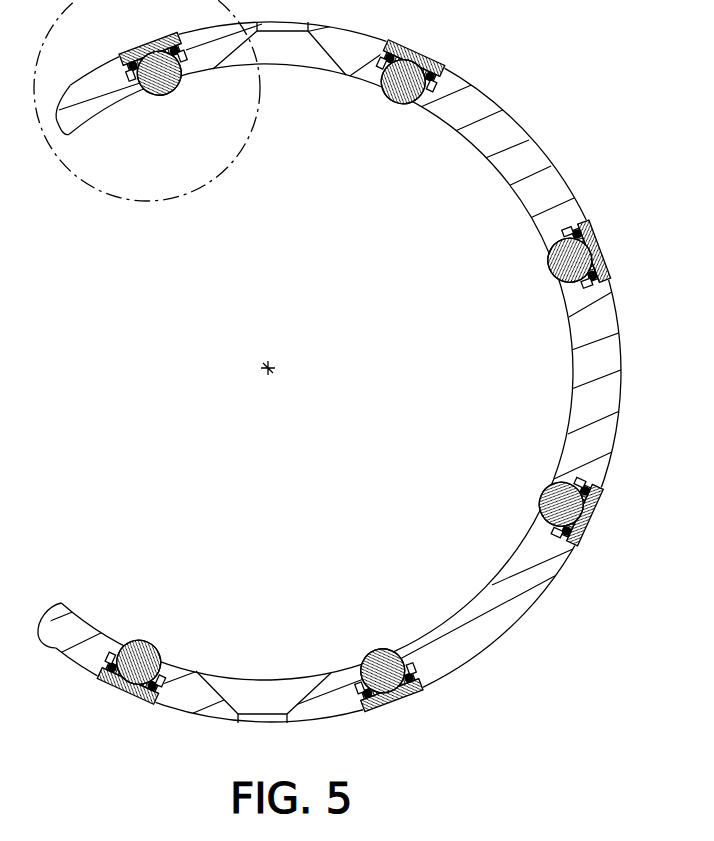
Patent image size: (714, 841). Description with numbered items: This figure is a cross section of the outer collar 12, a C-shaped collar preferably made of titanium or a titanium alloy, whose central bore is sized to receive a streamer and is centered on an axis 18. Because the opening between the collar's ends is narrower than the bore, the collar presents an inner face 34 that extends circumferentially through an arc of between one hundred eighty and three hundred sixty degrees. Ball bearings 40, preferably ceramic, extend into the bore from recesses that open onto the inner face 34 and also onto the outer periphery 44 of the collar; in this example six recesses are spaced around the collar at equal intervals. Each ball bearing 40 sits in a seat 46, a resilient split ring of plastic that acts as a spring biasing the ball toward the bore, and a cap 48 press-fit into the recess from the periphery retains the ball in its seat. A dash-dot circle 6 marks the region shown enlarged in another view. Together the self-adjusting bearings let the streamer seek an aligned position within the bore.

The detail circle for FIG. 6 is at (161, 202).
The outer collar 12 is at (351, 372).
The axis 18 is at (279, 366).
The inner face 34 is at (505, 178).
The ball bearing 40 is at (551, 271).
The outer periphery 44 is at (526, 132).
The seat 46 is at (604, 272).
The cap 48 is at (598, 494).